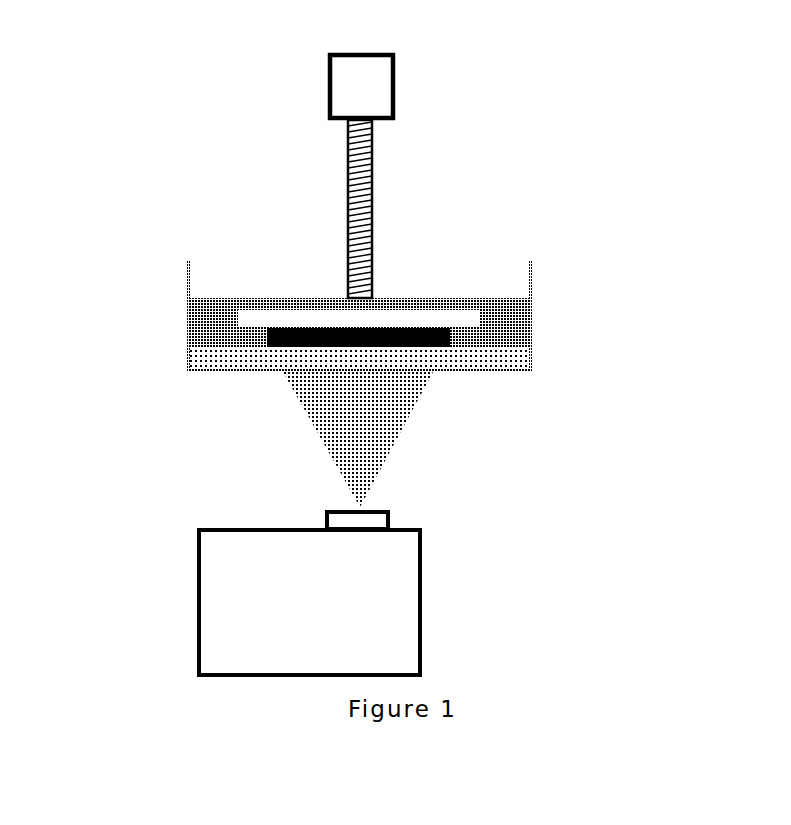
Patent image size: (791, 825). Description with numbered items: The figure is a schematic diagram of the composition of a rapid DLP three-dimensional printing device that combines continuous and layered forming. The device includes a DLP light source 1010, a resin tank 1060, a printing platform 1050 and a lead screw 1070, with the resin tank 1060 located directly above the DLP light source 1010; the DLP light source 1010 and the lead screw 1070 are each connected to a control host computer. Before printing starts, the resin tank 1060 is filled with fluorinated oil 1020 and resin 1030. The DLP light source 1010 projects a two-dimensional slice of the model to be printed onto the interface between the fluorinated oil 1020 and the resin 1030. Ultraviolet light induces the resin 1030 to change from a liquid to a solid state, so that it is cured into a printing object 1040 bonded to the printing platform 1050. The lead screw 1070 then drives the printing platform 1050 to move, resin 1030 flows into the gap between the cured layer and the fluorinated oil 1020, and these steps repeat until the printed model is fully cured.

The DLP light source 1010 is at (423, 593).
The fluorinated oil 1020 is at (520, 351).
The resin 1030 is at (523, 329).
The printing object 1040 is at (267, 337).
The printing platform 1050 is at (240, 310).
The resin tank 1060 is at (532, 295).
The lead screw 1070 is at (373, 165).